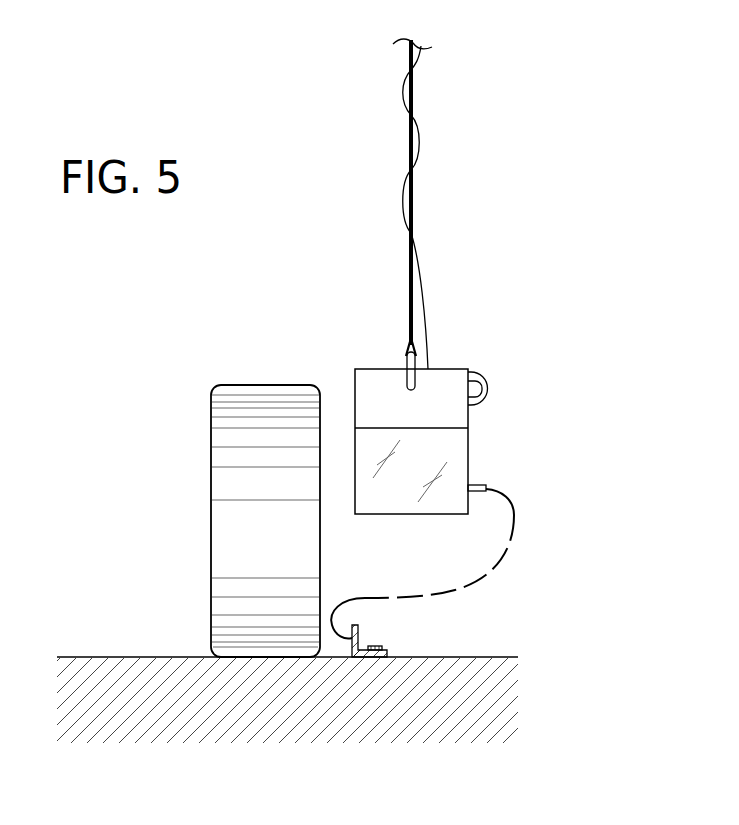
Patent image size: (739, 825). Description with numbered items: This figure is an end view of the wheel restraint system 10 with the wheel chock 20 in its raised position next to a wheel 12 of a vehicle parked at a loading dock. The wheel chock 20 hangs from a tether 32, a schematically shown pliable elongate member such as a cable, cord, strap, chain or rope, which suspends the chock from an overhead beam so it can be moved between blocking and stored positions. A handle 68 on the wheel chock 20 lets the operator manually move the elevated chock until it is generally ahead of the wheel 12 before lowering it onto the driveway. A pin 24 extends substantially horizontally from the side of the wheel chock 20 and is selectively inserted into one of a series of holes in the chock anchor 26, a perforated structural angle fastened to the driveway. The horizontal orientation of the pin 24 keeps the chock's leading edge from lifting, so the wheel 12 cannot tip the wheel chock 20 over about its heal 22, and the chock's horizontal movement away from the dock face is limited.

The wheel restraint system 10 is at (553, 290).
The wheel 12 is at (211, 536).
The wheel chock 20 is at (380, 369).
The heal 22 is at (437, 428).
The pin 24 is at (477, 485).
The chock anchor 26 is at (358, 628).
The tether 32 is at (410, 147).
The handle 68 is at (487, 386).